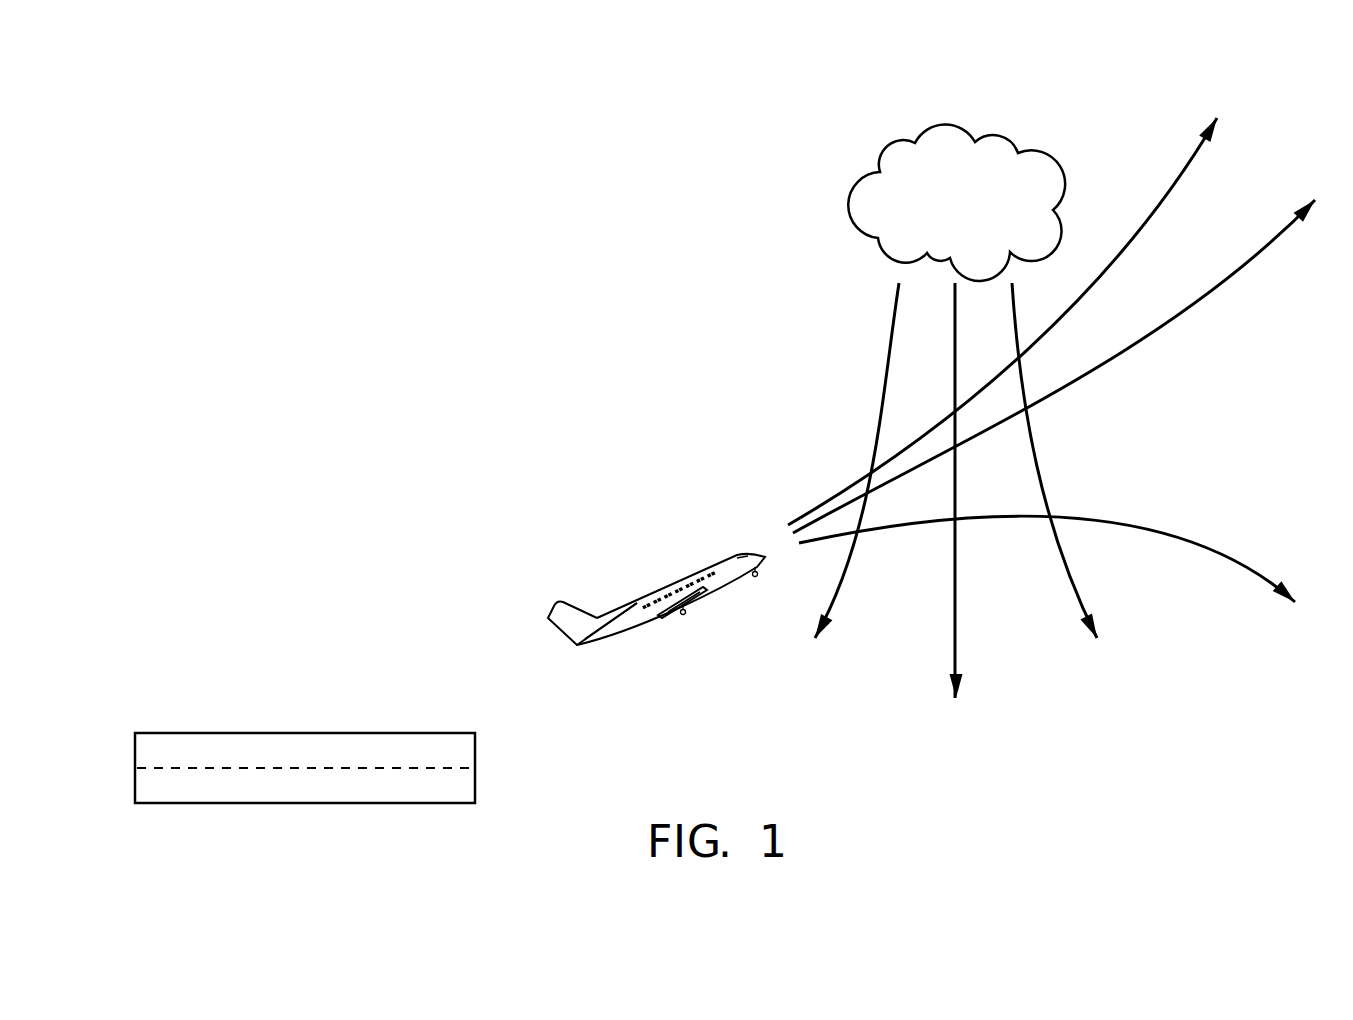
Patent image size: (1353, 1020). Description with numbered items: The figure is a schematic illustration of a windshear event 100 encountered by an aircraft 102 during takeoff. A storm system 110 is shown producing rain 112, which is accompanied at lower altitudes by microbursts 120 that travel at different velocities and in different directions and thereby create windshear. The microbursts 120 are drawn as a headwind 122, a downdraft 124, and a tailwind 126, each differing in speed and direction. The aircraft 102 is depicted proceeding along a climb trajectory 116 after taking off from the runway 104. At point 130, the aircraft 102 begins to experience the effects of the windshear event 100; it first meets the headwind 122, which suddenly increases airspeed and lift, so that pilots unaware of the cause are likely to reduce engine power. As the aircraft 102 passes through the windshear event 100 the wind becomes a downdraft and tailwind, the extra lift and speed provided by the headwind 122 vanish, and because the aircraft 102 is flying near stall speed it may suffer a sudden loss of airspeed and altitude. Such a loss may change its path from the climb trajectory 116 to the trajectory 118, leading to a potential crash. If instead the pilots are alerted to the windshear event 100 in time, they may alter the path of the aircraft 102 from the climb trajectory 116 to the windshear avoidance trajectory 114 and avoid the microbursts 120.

The windshear event 100 is at (1012, 112).
The aircraft 102 is at (632, 632).
The runway 104 is at (223, 733).
The storm system 110 is at (972, 212).
The rain 112 is at (915, 270).
The windshear avoidance trajectory 114 is at (1177, 177).
The climb trajectory 116 is at (1272, 247).
The trajectory 118 is at (1233, 555).
The microbursts 120 is at (906, 684).
The headwind 122 is at (840, 588).
The downdraft 124 is at (957, 655).
The tailwind 126 is at (1082, 602).
The point 130 is at (773, 530).